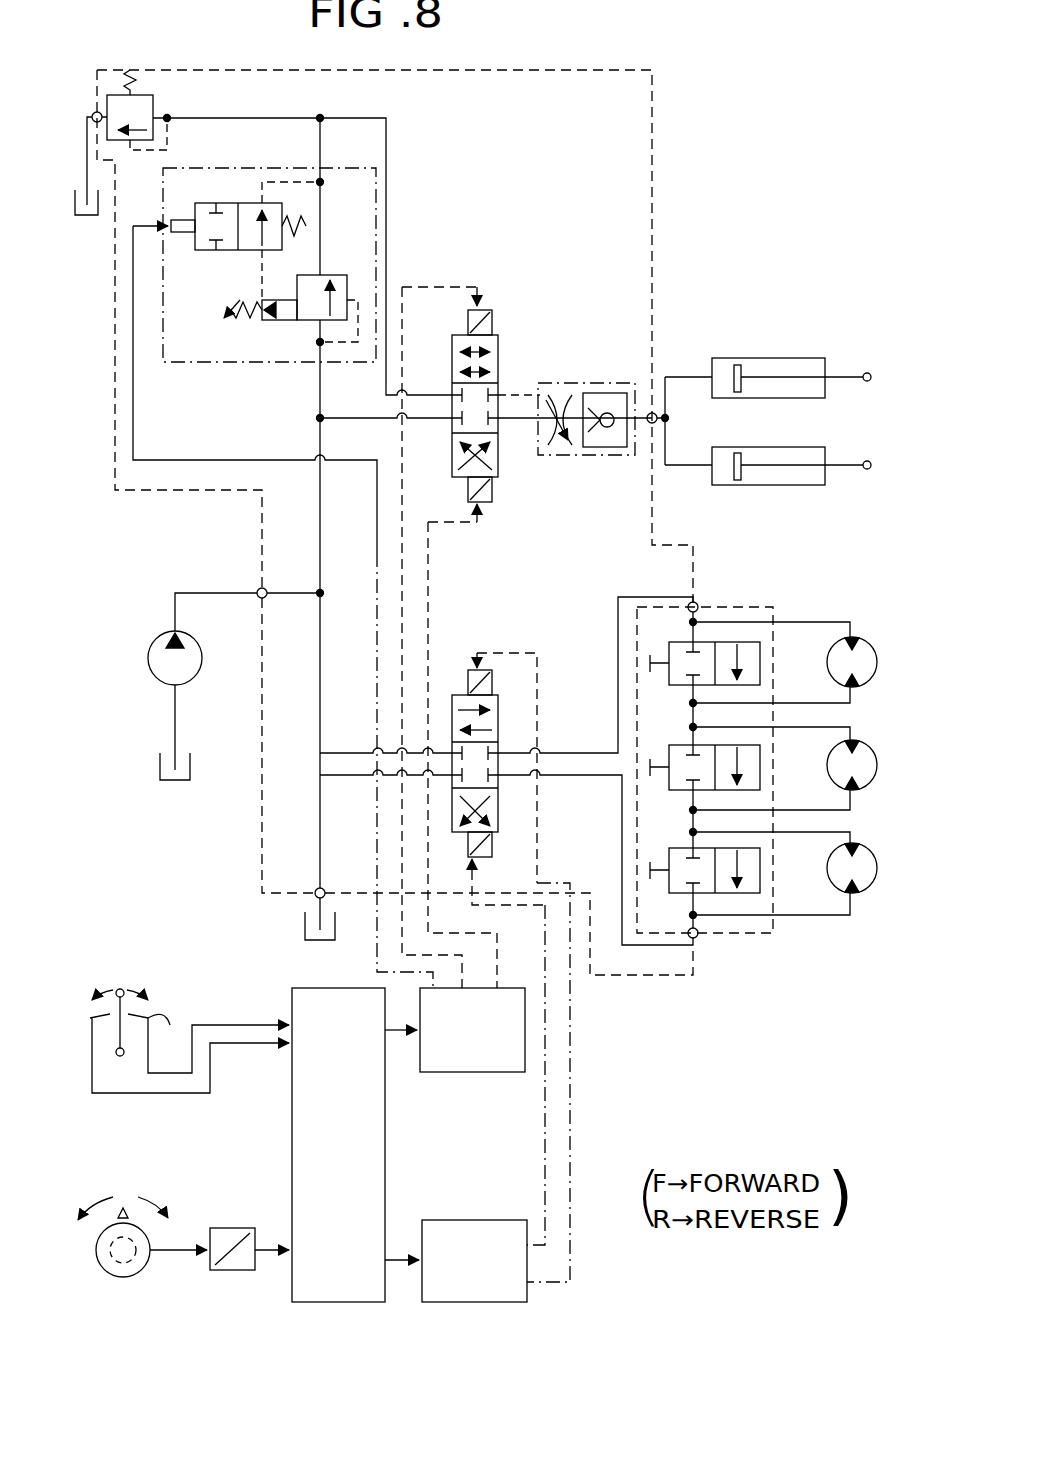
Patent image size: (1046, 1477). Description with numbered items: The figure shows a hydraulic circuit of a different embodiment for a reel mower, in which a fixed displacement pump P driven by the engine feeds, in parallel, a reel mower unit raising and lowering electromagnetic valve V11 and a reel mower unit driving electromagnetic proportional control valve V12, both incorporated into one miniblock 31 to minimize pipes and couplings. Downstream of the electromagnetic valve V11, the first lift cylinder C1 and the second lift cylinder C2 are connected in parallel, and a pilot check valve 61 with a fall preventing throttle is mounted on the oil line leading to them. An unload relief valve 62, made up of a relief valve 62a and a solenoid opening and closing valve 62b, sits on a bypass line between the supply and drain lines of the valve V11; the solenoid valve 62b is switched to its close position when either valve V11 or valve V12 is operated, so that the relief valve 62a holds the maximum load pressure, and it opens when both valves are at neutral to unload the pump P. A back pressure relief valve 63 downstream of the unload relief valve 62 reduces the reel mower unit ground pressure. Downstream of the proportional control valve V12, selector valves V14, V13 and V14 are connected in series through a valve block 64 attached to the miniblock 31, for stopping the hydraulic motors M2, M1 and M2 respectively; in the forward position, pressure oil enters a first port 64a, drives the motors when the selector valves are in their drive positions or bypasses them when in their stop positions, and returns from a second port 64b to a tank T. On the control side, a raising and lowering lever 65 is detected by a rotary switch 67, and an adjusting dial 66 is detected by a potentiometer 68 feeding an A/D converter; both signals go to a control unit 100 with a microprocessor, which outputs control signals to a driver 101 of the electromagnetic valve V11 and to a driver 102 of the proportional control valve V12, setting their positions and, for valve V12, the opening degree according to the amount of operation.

The miniblock 31 is at (652, 190).
The pilot check valve 61 is at (605, 383).
The unload relief valve 62 is at (280, 362).
The relief valve 62a is at (297, 325).
The solenoid opening and closing valve 62b is at (234, 203).
The back pressure relief valve 63 is at (153, 108).
The valve block 64 is at (748, 606).
The first port 64a is at (697, 604).
The second port 64b is at (696, 938).
The raising and lowering lever 65 is at (122, 992).
The adjusting dial 66 is at (150, 1258).
The rotary switch 67 is at (208, 1043).
The potentiometer 68 is at (104, 1260).
The control unit 100 is at (292, 1150).
The driver 101 is at (462, 1073).
The driver 102 is at (475, 1220).
The reel mower unit raising and lowering electromagnetic valve V11 is at (499, 343).
The reel mower unit driving electromagnetic proportional control valve V12 is at (452, 695).
The selector valve V13 is at (680, 745).
The selector valve V14 is at (682, 684).
The first lift cylinder C1 is at (791, 358).
The second lift cylinder C2 is at (791, 447).
The hydraulic motor M1 is at (829, 761).
The hydraulic motor M2 is at (829, 658).
The fixed displacement pump P is at (193, 675).
The tank T is at (305, 932).